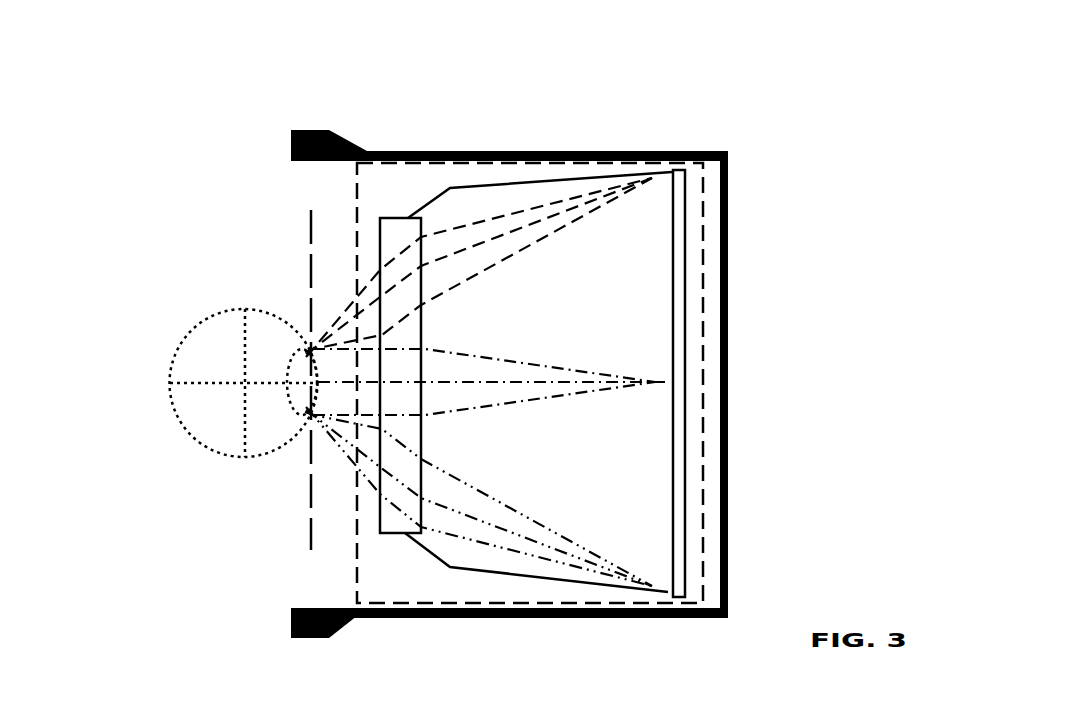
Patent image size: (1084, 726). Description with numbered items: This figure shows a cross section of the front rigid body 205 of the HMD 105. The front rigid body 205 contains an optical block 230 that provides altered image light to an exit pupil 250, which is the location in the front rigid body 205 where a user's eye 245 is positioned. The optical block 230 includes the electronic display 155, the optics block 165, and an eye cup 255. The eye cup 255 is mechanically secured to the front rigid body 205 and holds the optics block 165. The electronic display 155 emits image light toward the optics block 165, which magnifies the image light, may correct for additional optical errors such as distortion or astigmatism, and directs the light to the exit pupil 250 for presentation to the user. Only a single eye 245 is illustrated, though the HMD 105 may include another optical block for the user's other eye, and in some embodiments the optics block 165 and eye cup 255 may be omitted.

The HMD 105 is at (113, 47).
The electronic display 155 is at (683, 297).
The optics block 165 is at (380, 240).
The front rigid body 205 is at (645, 152).
The optical block 230 is at (357, 510).
The eye 245 is at (207, 318).
The exit pupil 250 is at (302, 528).
The eye cup 255 is at (450, 188).